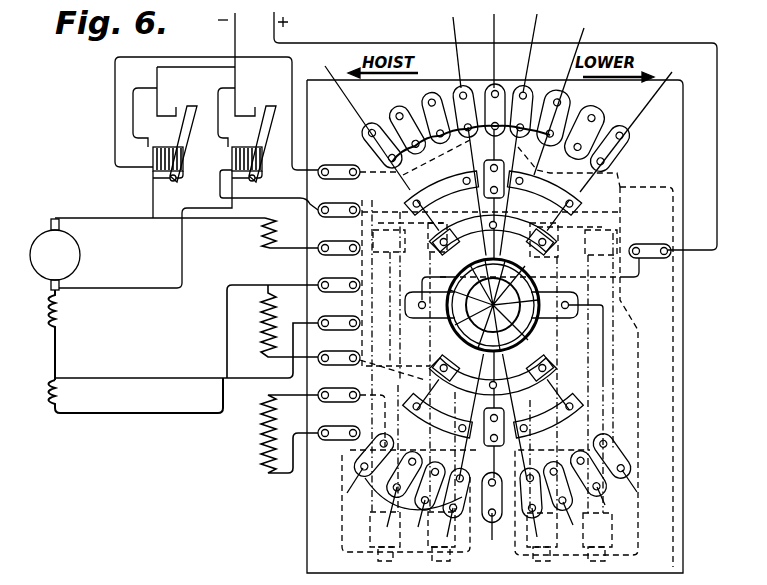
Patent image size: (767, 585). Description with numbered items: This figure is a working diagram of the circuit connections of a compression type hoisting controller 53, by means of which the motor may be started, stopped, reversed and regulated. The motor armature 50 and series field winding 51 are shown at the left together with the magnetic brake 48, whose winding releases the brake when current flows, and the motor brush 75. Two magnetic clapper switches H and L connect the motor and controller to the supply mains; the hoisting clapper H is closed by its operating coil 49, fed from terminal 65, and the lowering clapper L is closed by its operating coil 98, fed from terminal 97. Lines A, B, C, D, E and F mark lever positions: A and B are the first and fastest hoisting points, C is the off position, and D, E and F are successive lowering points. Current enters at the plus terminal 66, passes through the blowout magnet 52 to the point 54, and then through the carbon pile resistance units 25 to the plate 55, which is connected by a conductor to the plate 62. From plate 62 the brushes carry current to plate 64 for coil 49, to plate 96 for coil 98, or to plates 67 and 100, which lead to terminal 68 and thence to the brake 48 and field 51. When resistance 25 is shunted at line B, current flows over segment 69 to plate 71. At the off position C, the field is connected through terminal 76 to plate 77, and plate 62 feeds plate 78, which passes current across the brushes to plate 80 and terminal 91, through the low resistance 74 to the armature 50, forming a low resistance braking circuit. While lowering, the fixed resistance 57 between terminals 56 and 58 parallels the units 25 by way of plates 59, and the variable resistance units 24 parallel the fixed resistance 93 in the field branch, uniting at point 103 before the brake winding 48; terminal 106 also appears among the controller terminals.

The operating coil of the hoisting clapper 49 is at (167, 147).
The operating coil of the clapper switch L 98 is at (246, 147).
The motor armature 50 is at (55, 255).
The controller terminal 91 is at (52, 219).
The motor brush 75 is at (50, 291).
The series field winding 51 is at (63, 335).
The magnetic brake 48 is at (136, 395).
The low resistance 74 is at (278, 233).
The point 103 is at (264, 285).
The fixed resistance 93 is at (278, 321).
The fixed resistance 57 is at (277, 434).
The controller 53 is at (693, 354).
The terminal 65 is at (339, 168).
The terminal 97 is at (339, 210).
The terminal 68 is at (339, 285).
The controller terminal 76 is at (339, 323).
The contact terminal 106 is at (339, 358).
The terminal 56 is at (339, 395).
The terminal 58 is at (322, 440).
The plates 67 is at (419, 100).
The plate 77 is at (491, 86).
The plate 100 is at (562, 98).
The plate 64 is at (441, 193).
The plate 96 is at (545, 193).
The plate 62 is at (492, 235).
The plate 80 is at (492, 375).
The plate 55 is at (438, 415).
The plate 71 is at (549, 415).
The plate 78 is at (499, 438).
The blowout magnet 52 is at (504, 303).
The plus terminal 66 is at (653, 240).
The point 54 is at (392, 442).
The plates 59 is at (433, 494).
The segment 69 is at (608, 458).
The carbon pile resistance units 25 is at (445, 553).
The variable resistance units 24 is at (595, 550).
The hoisting clapper switch H is at (165, 124).
The lowering clapper switch L is at (247, 134).
The line A is at (448, 45).
The line B is at (361, 121).
The line C is at (495, 44).
The line D is at (531, 46).
The line E is at (559, 94).
The line F is at (628, 125).